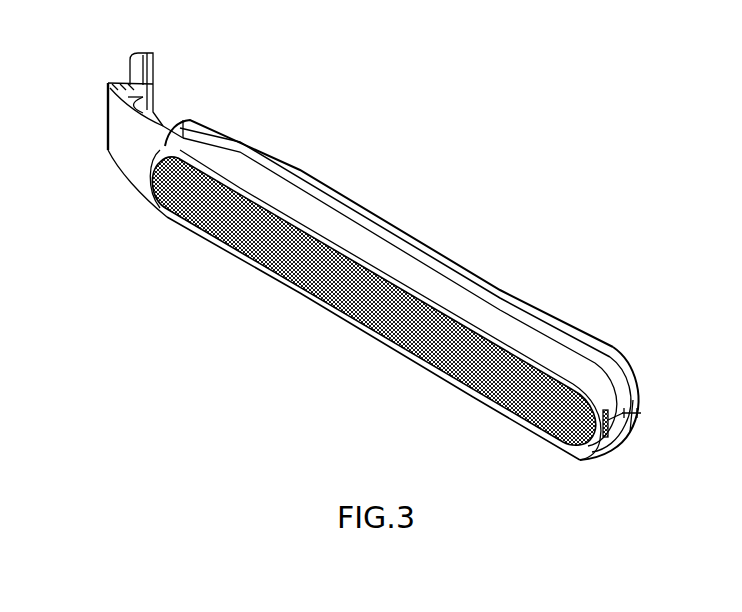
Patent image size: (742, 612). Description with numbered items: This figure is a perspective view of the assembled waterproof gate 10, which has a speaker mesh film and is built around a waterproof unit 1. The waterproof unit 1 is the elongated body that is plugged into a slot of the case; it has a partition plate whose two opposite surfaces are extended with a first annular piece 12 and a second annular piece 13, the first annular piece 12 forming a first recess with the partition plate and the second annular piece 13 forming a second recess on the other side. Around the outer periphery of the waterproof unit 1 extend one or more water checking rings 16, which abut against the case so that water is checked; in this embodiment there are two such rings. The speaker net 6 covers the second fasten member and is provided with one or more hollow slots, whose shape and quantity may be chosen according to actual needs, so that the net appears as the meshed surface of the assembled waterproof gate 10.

The waterproof unit 1 is at (640, 383).
The waterproof gate 10 is at (383, 47).
The first annular piece 12 is at (540, 312).
The second annular piece 13 is at (473, 397).
The speaker net 6 is at (362, 322).
The water checking ring 16 is at (642, 398).